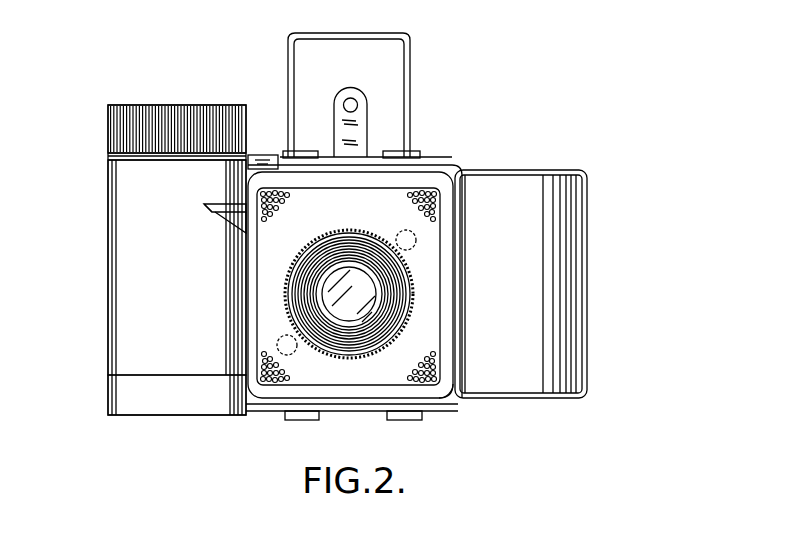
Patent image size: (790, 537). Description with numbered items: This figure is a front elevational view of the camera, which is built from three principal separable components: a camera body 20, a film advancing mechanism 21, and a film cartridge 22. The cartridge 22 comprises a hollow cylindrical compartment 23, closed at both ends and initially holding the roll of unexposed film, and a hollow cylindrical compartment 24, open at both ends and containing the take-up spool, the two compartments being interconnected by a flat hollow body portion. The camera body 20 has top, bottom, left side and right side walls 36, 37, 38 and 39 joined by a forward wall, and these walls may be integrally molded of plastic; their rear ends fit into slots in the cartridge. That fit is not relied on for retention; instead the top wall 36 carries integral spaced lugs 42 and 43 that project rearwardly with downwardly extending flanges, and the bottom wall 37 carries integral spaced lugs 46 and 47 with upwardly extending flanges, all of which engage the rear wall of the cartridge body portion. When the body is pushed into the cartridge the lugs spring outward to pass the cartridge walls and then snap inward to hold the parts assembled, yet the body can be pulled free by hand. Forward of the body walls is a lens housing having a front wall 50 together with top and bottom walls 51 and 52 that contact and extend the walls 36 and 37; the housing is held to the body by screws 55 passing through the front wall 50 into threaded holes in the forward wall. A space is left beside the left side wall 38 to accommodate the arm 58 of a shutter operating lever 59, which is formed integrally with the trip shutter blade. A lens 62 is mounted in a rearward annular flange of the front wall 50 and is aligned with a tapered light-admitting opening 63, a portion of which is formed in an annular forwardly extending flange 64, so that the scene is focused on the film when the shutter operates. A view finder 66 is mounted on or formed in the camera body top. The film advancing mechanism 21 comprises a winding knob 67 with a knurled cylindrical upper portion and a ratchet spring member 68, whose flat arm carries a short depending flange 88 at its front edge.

The camera body 20 is at (381, 367).
The film advancing mechanism 21 is at (106, 128).
The film cartridge 22 is at (592, 240).
The hollow cylindrical compartment 23 is at (556, 316).
The hollow cylindrical compartment 24 is at (140, 280).
The top wall 36 is at (436, 172).
The bottom wall 37 is at (274, 400).
The left side wall 38 is at (246, 292).
The right side wall 39 is at (462, 241).
The lug 42 is at (302, 151).
The lug 43 is at (410, 150).
The lug 46 is at (298, 420).
The lug 47 is at (406, 420).
The front wall 50 is at (370, 186).
The top wall 51 is at (414, 190).
The bottom wall 52 is at (428, 384).
The screw 55 is at (402, 231).
The arm 58 is at (236, 221).
The shutter operating lever 59 is at (204, 208).
The lens 62 is at (342, 270).
The light-admitting opening 63 is at (386, 318).
The annular forwardly extending flange 64 is at (300, 258).
The view finder 66 is at (286, 84).
The winding knob 67 is at (168, 112).
The ratchet spring member 68 is at (106, 157).
The depending flange 88 is at (262, 158).